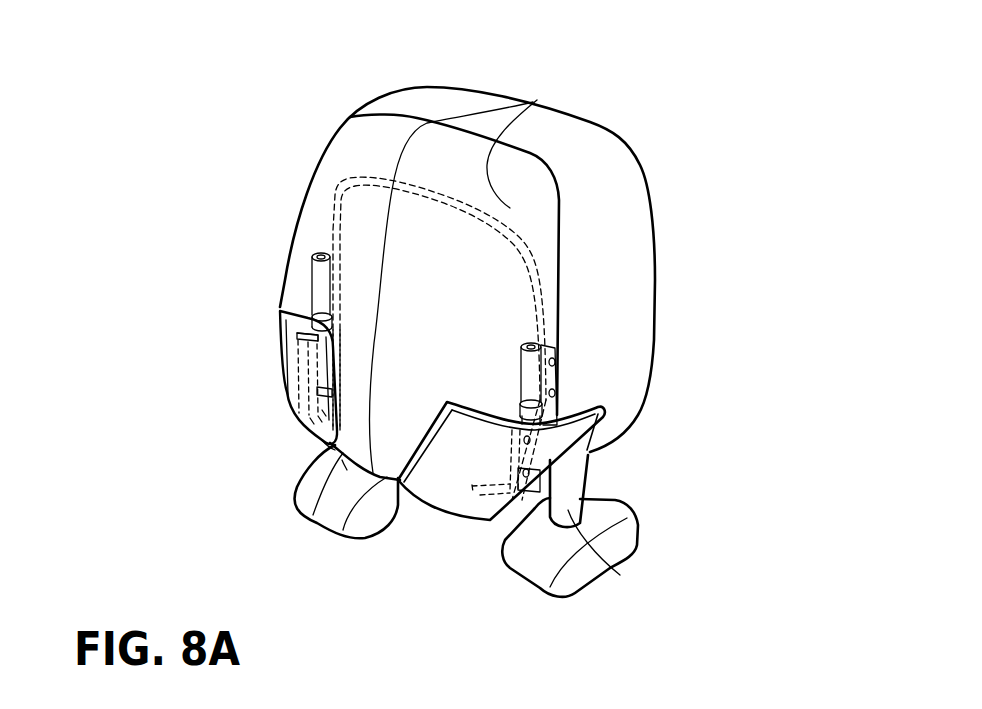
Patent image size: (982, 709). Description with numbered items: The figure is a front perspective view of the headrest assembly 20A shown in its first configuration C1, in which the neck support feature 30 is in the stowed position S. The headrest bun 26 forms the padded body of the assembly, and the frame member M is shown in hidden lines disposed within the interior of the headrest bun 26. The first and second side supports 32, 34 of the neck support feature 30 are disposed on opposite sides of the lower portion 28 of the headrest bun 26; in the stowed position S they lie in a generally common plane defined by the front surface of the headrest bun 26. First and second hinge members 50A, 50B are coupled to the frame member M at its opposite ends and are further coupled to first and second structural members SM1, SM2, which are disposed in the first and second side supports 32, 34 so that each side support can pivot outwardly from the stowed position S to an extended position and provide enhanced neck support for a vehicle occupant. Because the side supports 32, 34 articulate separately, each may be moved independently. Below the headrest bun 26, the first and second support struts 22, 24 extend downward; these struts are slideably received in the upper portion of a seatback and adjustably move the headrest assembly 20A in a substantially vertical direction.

The headrest assembly 20A is at (566, 283).
The first configuration C1 is at (695, 228).
The headrest bun 26 is at (533, 102).
The frame member M is at (420, 190).
The first hinge member 50A is at (308, 280).
The second hinge member 50B is at (565, 370).
The first side support 32 is at (298, 340).
The neck support feature 30 is at (191, 380).
The stowed position S is at (210, 352).
The first structural member SM1 is at (370, 425).
The lower portion 28 is at (327, 433).
The first support strut 22 is at (307, 510).
The second side support 34 is at (463, 470).
The second structural member SM2 is at (485, 490).
The second support strut 24 is at (620, 575).